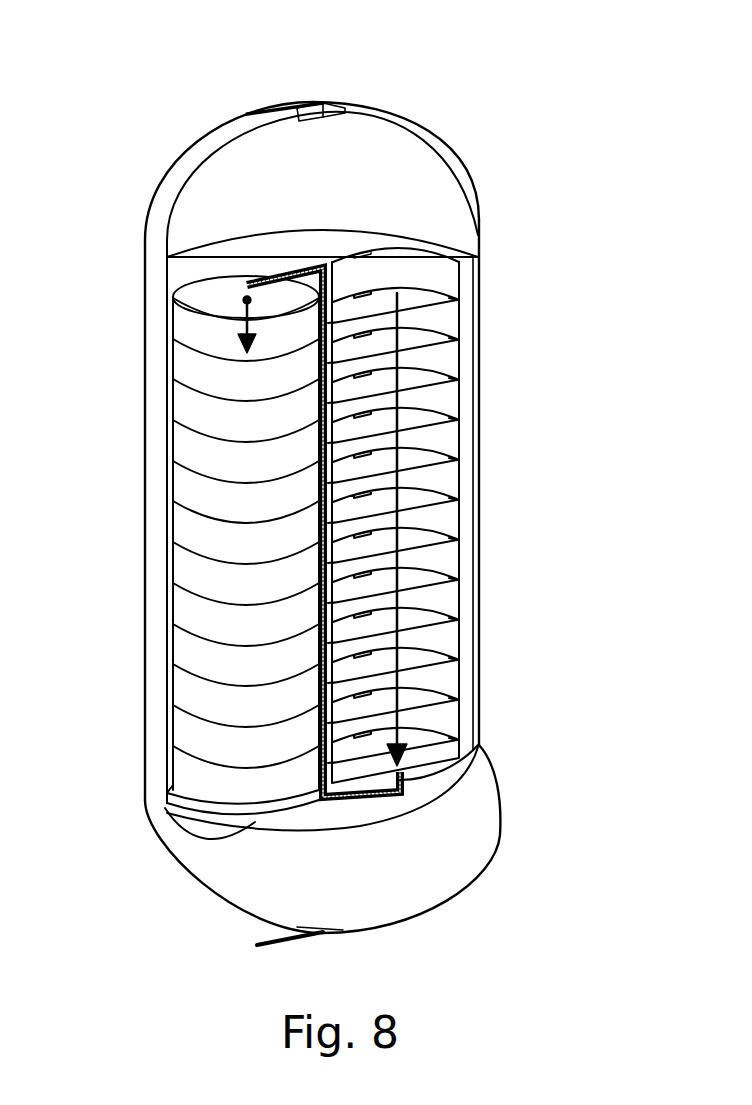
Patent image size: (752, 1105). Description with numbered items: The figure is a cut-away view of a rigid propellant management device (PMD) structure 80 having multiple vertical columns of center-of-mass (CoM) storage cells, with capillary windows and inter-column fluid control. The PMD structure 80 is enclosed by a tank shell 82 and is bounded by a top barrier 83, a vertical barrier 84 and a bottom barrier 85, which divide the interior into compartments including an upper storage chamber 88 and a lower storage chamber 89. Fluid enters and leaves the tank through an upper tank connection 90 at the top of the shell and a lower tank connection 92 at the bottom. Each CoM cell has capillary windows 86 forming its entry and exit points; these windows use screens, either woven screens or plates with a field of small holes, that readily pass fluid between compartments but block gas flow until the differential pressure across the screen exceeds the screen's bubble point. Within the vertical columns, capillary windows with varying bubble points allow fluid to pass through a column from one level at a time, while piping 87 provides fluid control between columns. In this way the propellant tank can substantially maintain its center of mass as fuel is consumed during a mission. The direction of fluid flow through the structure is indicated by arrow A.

The rigid PMD structure 80 is at (520, 158).
The tank shell 82 is at (185, 170).
The top barrier 83 is at (220, 263).
The vertical barrier 84 is at (470, 312).
The bottom barrier 85 is at (410, 805).
The capillary window 86 is at (456, 440).
The piping 87 is at (492, 762).
The upper storage chamber 88 is at (313, 179).
The lower storage chamber 89 is at (197, 827).
The upper tank connection 90 is at (280, 103).
The lower tank connection 92 is at (270, 940).
The arrow A is at (448, 517).